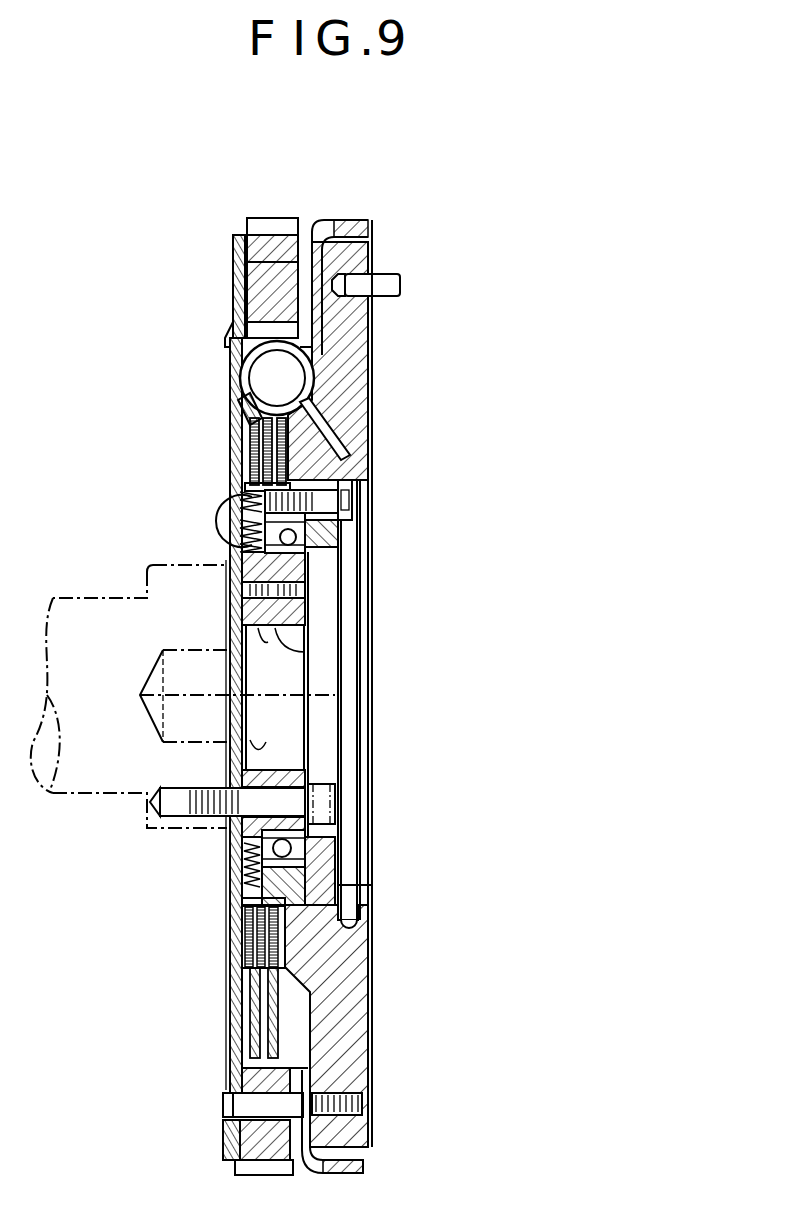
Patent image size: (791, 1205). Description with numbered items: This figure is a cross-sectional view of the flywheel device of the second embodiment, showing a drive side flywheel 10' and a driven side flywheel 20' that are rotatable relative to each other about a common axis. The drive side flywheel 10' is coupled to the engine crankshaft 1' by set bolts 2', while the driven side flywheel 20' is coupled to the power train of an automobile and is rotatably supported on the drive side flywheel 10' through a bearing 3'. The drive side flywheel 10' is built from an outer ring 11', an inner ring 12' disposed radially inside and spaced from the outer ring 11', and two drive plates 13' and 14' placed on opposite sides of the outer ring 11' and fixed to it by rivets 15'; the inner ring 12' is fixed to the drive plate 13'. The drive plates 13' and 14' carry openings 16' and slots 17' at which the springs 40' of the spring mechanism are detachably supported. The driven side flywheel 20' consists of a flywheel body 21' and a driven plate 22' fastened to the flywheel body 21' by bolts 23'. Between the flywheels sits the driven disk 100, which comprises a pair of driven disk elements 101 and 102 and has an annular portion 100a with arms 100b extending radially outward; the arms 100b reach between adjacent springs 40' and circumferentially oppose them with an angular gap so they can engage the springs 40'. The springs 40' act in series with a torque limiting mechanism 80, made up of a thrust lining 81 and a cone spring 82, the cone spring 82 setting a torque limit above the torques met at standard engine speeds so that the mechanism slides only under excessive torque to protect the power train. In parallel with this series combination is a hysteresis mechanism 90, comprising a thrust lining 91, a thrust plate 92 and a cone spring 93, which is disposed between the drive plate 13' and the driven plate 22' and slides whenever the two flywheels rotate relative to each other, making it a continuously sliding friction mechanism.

The engine crankshaft 1' is at (183, 692).
The set bolts 2' is at (293, 797).
The bearing 3' is at (348, 690).
The drive side flywheel 10' is at (296, 646).
The outer ring 11' is at (235, 674).
The inner ring 12' is at (346, 694).
The drive plate 13' is at (208, 694).
The drive plate 14' is at (366, 673).
The rivets 15' is at (236, 1099).
The openings 16' is at (202, 315).
The slots 17' is at (372, 336).
The driven side flywheel 20' is at (368, 645).
The flywheel body 21' is at (381, 355).
The driven plate 22' is at (356, 683).
The bolts 23' is at (357, 502).
The springs 40' is at (216, 378).
The torque limiting mechanism 80 is at (284, 442).
The thrust lining 81 is at (237, 427).
The cone spring 82 is at (253, 370).
The hysteresis mechanism 90 is at (171, 682).
The thrust lining 91 is at (210, 532).
The thrust plate 92 is at (245, 490).
The cone spring 93 is at (232, 525).
The driven disk 100 is at (276, 983).
The annular portion 100a is at (250, 445).
The arms 100b is at (275, 1045).
The driven disk element 101 is at (255, 995).
The driven disk element 102 is at (285, 1003).